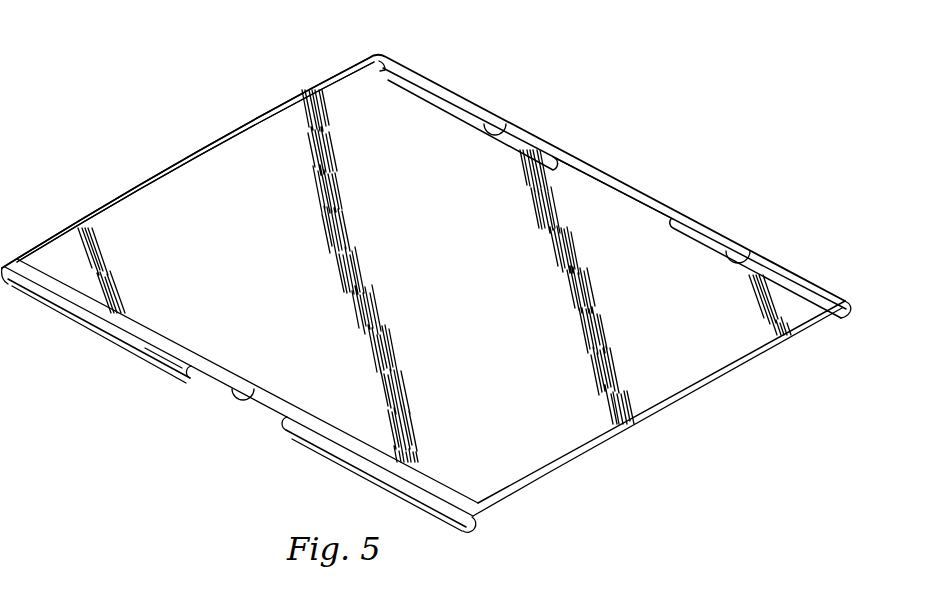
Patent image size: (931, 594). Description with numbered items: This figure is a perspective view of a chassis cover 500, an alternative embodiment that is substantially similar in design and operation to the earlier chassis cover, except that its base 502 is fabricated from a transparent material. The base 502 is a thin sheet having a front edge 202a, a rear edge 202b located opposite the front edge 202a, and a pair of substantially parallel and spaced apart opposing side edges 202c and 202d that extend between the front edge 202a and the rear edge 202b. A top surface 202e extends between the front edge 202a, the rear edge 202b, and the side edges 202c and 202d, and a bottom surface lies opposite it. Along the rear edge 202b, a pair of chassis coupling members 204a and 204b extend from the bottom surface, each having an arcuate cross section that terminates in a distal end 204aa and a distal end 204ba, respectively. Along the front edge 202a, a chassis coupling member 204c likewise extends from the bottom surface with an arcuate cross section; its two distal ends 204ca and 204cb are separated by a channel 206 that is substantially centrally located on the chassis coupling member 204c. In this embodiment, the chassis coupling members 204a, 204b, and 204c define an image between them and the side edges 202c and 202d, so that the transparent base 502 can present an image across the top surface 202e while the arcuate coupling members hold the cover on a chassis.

The chassis cover 500 is at (661, 101).
The base 502 is at (110, 198).
The front edge 202a is at (262, 396).
The rear edge 202b is at (614, 175).
The side edge 202c is at (216, 144).
The side edge 202d is at (601, 445).
The top surface 202e is at (284, 116).
The chassis coupling member 204a is at (716, 229).
The distal end 204aa is at (754, 262).
The chassis coupling member 204b is at (447, 91).
The distal end 204ba is at (507, 131).
The chassis coupling member 204c is at (142, 356).
The distal end 204ca is at (481, 530).
The distal end 204cb is at (199, 384).
The channel 206 is at (255, 432).